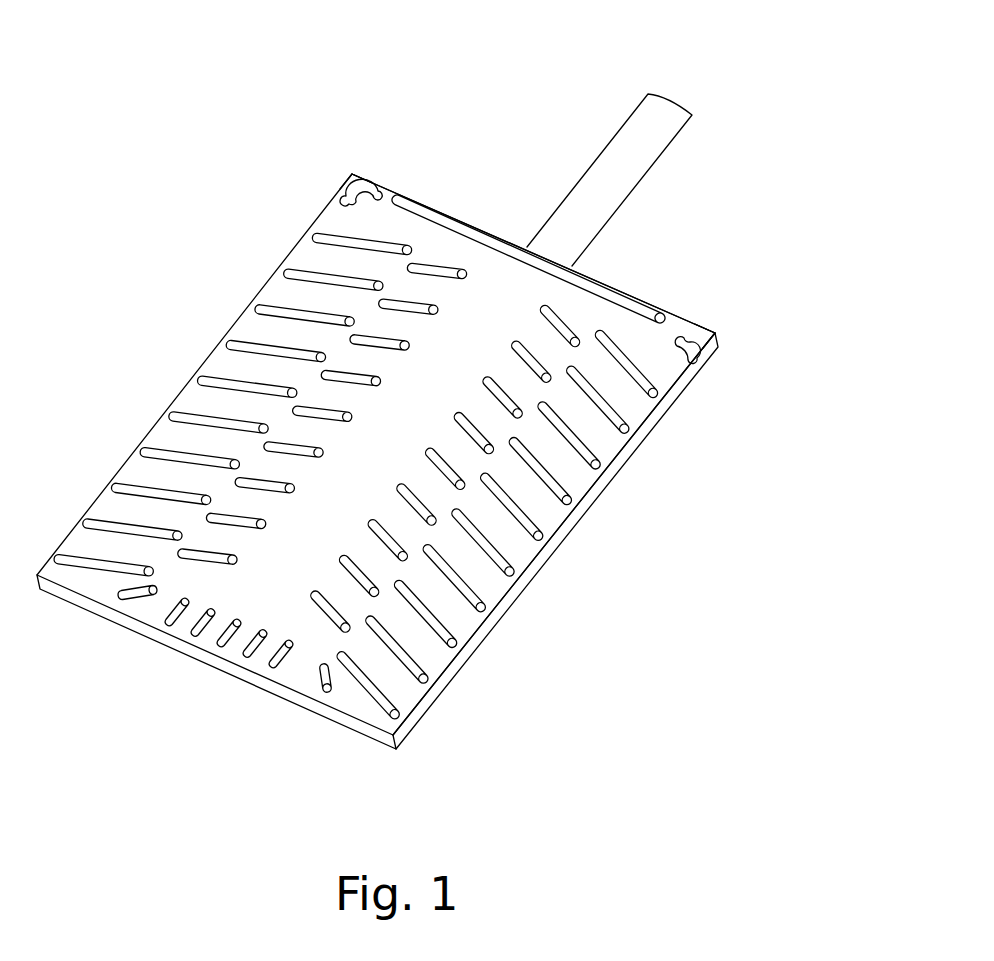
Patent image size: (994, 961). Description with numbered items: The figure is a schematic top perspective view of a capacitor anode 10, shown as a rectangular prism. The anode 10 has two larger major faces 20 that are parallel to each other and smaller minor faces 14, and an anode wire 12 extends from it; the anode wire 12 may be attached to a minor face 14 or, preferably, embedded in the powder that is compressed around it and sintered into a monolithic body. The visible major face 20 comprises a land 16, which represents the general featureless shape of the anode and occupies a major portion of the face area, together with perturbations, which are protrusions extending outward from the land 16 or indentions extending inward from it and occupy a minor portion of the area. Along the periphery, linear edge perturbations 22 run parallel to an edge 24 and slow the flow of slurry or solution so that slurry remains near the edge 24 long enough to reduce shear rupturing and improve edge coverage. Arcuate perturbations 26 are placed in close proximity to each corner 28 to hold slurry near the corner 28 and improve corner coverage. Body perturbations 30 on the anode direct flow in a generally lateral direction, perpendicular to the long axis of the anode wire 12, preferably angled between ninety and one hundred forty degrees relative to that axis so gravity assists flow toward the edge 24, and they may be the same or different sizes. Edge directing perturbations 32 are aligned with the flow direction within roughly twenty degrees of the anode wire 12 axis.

The anode 10 is at (437, 396).
The anode wire 12 is at (628, 155).
The minor faces 14 is at (627, 462).
The land 16 is at (488, 310).
The major faces 20 is at (356, 478).
The edge perturbations 22 is at (430, 213).
The edge 24 is at (470, 219).
The arcuate perturbations 26 is at (365, 186).
The corner 28 is at (355, 170).
The body perturbations 30 is at (459, 484).
The edge directing perturbations 32 is at (207, 618).